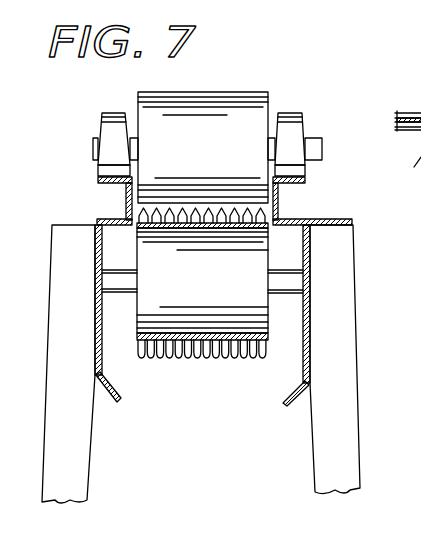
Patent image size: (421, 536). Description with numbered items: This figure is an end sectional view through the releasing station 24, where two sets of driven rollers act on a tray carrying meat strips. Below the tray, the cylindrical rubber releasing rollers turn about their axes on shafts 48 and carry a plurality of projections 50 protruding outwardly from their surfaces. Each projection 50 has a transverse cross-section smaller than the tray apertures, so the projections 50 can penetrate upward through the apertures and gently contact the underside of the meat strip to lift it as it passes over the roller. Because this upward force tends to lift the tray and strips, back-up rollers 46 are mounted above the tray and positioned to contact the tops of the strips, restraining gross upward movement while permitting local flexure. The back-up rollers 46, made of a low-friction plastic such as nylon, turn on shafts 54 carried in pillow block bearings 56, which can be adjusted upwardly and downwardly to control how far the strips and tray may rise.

The releasing station 24 is at (220, 90).
The back-up rollers 46 is at (406, 87).
The shafts 48 is at (289, 293).
The projections 50 is at (263, 213).
The shafts 54 is at (321, 154).
The pillow block bearings 56 is at (101, 125).